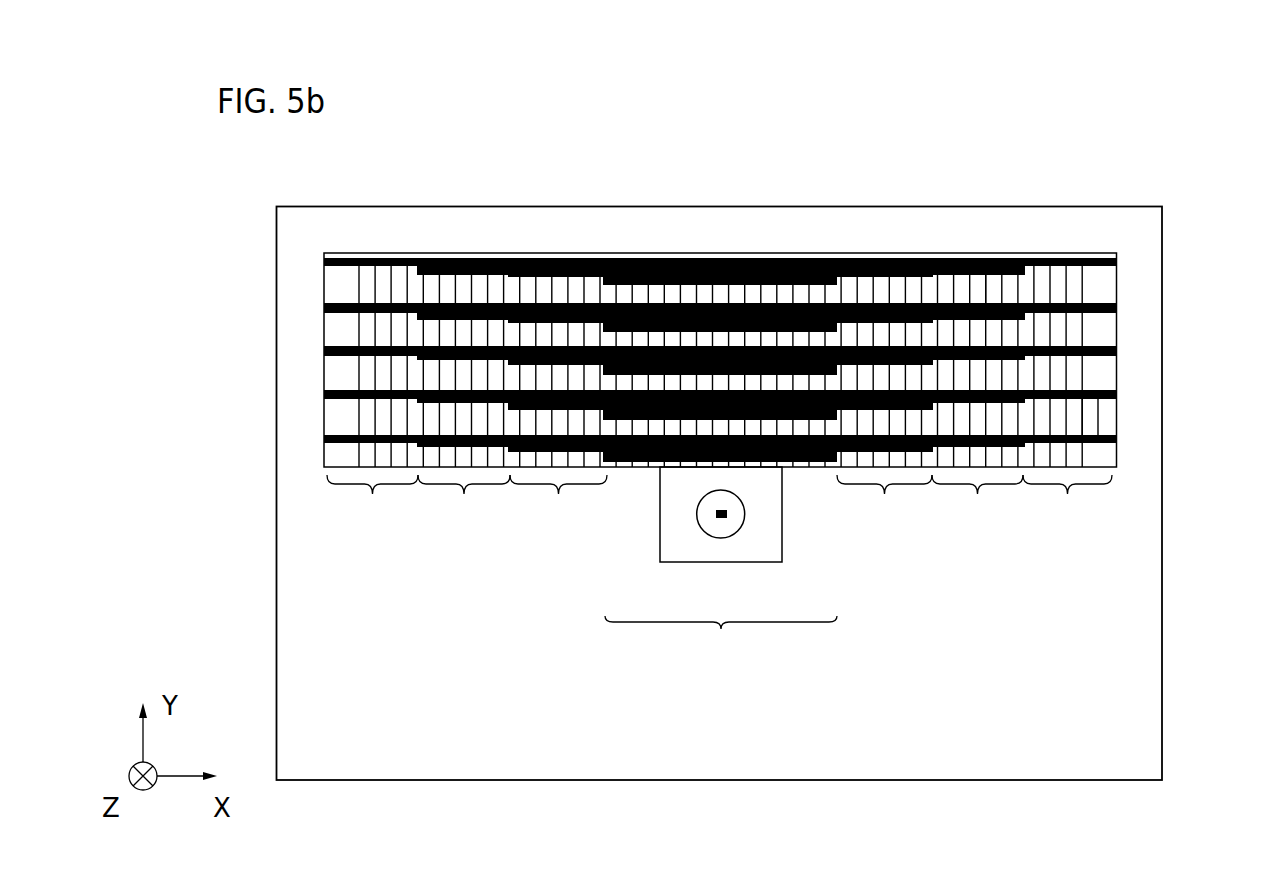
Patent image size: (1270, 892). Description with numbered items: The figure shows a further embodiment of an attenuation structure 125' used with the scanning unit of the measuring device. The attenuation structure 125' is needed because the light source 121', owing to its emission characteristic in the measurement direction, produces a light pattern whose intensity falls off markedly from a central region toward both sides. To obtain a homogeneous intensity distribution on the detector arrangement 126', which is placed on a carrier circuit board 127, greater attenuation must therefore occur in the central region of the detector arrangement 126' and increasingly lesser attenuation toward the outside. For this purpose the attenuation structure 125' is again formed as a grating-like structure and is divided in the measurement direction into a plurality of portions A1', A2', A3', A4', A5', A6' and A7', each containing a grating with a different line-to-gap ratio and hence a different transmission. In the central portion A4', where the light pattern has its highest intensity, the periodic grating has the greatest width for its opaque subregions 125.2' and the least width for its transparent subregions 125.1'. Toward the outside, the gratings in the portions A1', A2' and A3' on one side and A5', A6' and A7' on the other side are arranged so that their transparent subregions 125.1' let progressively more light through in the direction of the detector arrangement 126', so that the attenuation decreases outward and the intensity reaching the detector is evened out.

The attenuation structure 125' is at (720, 303).
The detector arrangement 126' is at (981, 221).
The opaque subregions 125.2' is at (797, 381).
The transparent subregions 125.1' is at (1176, 417).
The light source 121' is at (763, 530).
The carrier circuit board 127 is at (393, 760).
The portion A1' is at (372, 504).
The portion A2' is at (464, 504).
The portion A3' is at (558, 504).
The portion A4' is at (721, 644).
The portion A5' is at (884, 504).
The portion A6' is at (977, 504).
The portion A7' is at (1067, 504).